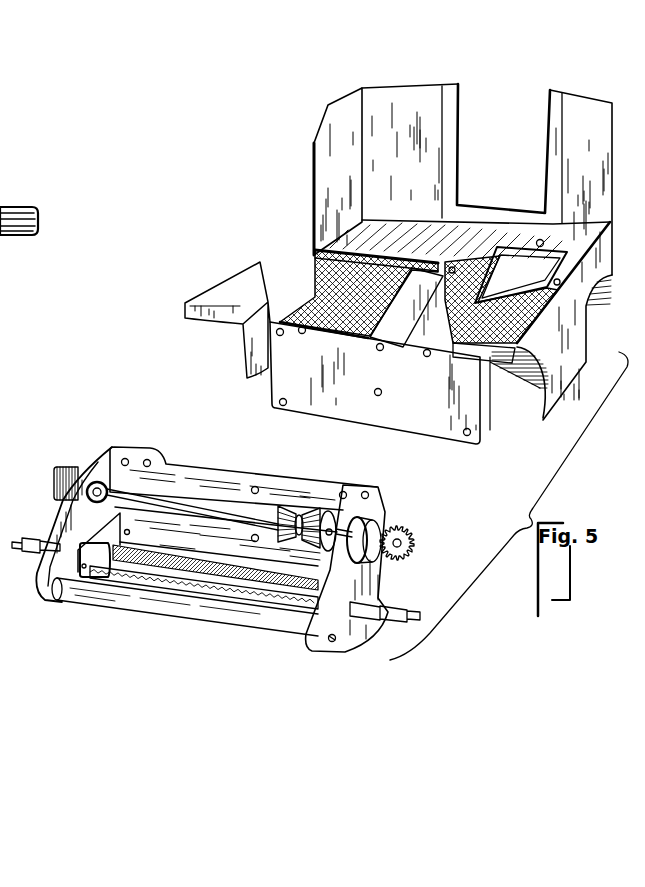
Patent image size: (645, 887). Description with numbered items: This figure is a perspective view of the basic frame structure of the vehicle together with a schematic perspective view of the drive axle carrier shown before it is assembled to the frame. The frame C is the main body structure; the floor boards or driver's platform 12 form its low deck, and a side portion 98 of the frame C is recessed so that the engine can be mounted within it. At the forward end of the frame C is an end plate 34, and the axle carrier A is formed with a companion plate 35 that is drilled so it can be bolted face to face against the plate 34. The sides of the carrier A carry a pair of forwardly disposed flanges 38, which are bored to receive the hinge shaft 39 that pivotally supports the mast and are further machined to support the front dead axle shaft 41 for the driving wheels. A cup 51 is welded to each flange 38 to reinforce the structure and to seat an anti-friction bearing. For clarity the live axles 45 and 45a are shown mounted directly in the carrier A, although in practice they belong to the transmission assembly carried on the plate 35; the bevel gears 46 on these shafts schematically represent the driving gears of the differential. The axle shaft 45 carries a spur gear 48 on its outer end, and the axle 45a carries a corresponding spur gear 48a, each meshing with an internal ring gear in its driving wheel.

The driver's platform 12 is at (307, 302).
The end plate 34 is at (405, 425).
The companion plate 35 is at (183, 466).
The flanges 38 is at (58, 512).
The hinge shaft 39 is at (110, 598).
The front dead axle shaft 41 is at (200, 590).
The live axle 45 is at (178, 507).
The live axle 45a is at (357, 518).
The bevel gears 46 is at (289, 510).
The spur gear 48 is at (70, 467).
The spur gear 48a is at (400, 528).
The cup 51 is at (47, 535).
The side portion 98 is at (495, 263).
The axle carrier A is at (256, 473).
The frame C is at (612, 252).